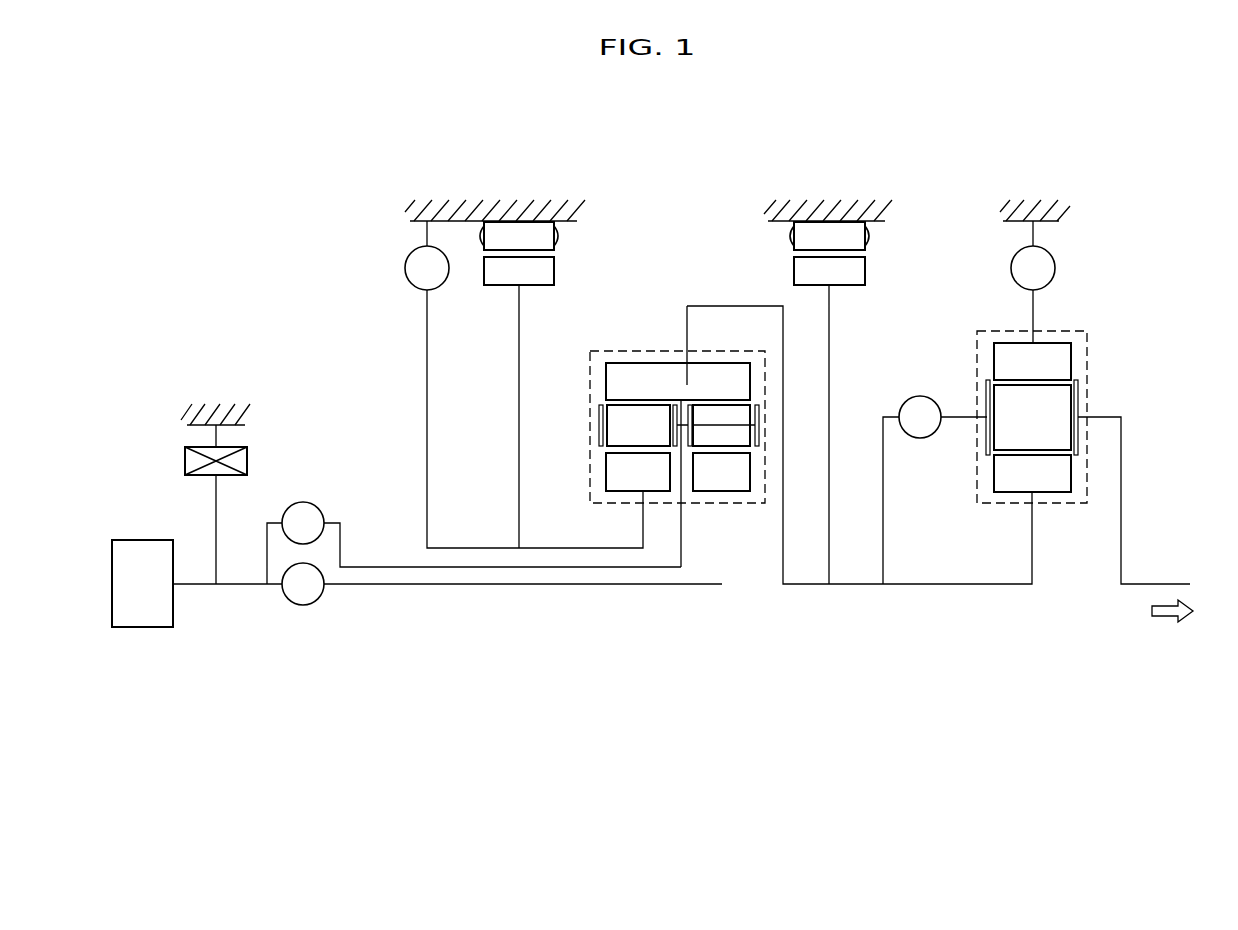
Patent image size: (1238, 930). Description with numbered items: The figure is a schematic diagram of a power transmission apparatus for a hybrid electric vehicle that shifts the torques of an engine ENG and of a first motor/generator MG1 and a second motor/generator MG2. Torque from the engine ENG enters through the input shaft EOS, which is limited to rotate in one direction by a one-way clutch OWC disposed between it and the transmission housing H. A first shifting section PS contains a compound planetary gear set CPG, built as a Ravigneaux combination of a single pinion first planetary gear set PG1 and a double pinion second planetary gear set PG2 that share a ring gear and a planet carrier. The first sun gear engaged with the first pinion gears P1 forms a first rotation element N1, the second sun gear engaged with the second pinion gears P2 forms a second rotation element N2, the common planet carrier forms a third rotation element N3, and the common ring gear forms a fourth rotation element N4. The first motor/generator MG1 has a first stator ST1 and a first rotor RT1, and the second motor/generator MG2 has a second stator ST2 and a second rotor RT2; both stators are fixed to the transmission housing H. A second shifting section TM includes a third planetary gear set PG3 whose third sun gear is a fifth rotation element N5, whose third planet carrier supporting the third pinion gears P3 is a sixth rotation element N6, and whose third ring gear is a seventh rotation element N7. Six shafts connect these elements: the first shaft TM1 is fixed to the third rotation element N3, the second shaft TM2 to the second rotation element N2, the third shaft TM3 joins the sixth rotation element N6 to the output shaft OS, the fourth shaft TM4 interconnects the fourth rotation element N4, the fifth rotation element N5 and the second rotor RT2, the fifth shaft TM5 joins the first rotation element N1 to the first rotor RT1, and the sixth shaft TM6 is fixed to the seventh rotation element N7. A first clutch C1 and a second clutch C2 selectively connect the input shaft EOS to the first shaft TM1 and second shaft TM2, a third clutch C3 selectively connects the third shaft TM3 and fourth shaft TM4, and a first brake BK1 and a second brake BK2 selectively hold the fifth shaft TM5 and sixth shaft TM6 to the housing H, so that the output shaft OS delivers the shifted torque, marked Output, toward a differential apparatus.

The engine ENG is at (142, 583).
The input shaft EOS is at (204, 587).
The one-way clutch OWC is at (252, 443).
The transmission housing H is at (218, 410).
The first clutch C1 is at (474, 543).
The second clutch C2 is at (303, 584).
The third clutch C3 is at (935, 490).
The first brake BK1 is at (427, 255).
The second brake BK2 is at (1033, 255).
The first motor/generator MG1 is at (548, 253).
The first stator ST1 is at (519, 236).
The first rotor RT1 is at (519, 271).
The second motor/generator MG2 is at (858, 253).
The second stator ST2 is at (829, 236).
The second rotor RT2 is at (829, 271).
The first shifting section PS is at (681, 238).
The second shifting section TM is at (1098, 238).
The compound planetary gear set CPG is at (641, 533).
The first planetary gear set PG1 is at (622, 505).
The second planetary gear set PG2 is at (703, 505).
The third planetary gear set PG3 is at (1064, 502).
The first rotation element N1 is at (638, 472).
The second rotation element N2 is at (721, 472).
The third rotation element N3 is at (599, 412).
The fourth rotation element N4 is at (678, 381).
The fifth rotation element N5 is at (999, 505).
The sixth rotation element N6 is at (1078, 392).
The seventh rotation element N7 is at (1032, 361).
The first pinion gears P1 is at (638, 425).
The second pinion gears P2 is at (721, 425).
The third pinion gears P3 is at (1032, 417).
The first shaft TM1 is at (453, 570).
The second shaft TM2 is at (402, 587).
The third shaft TM3 is at (957, 412).
The fourth shaft TM4 is at (800, 587).
The fifth shaft TM5 is at (498, 551).
The sixth shaft TM6 is at (1035, 304).
The output shaft OS is at (1170, 584).
The output Output is at (1168, 626).